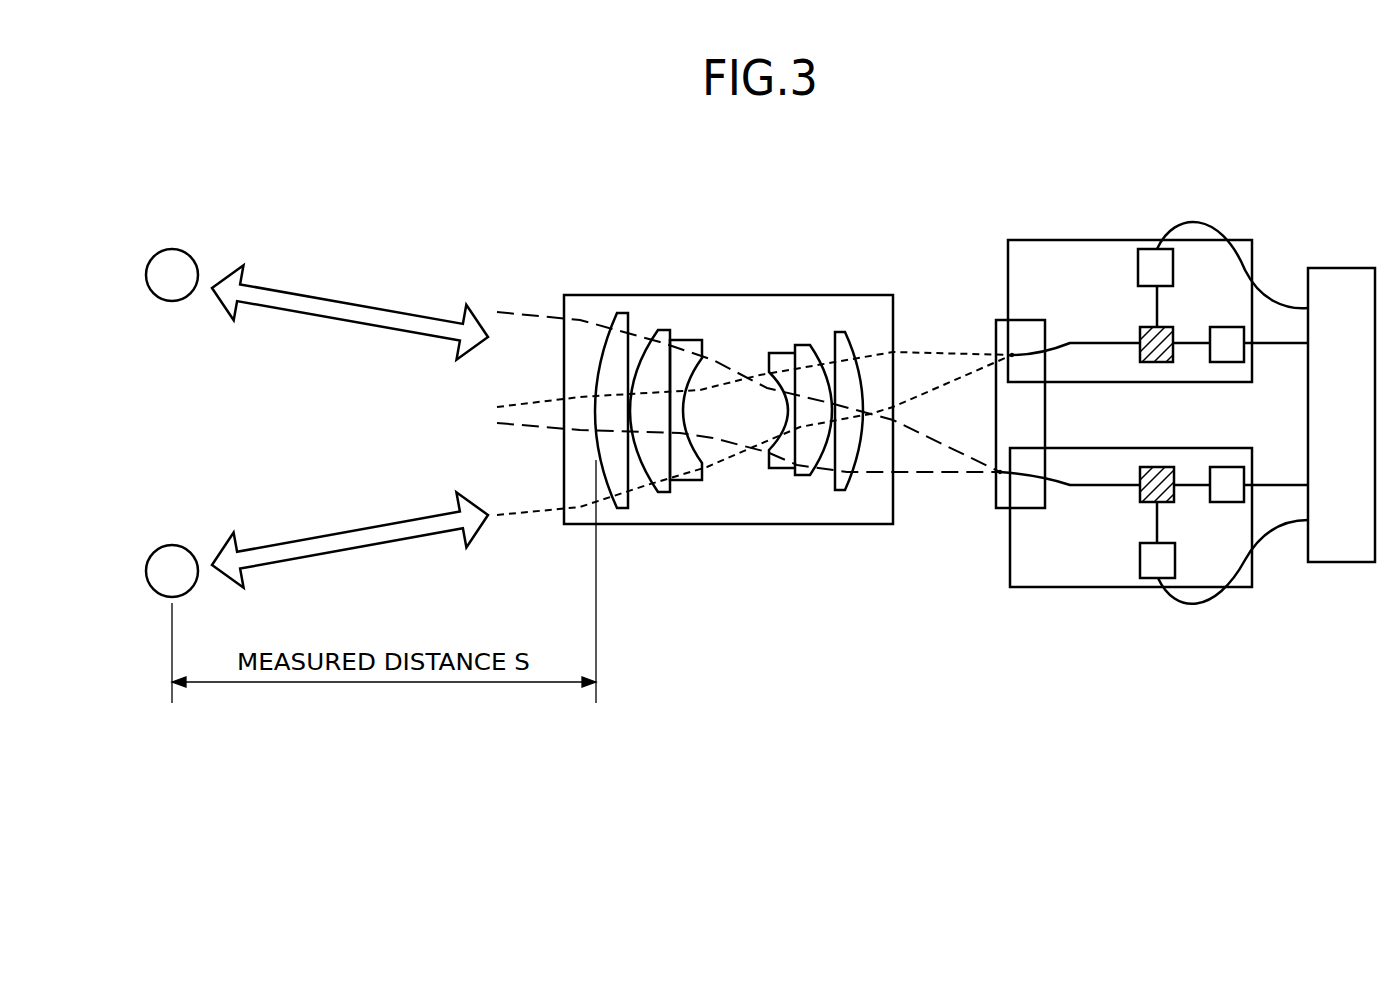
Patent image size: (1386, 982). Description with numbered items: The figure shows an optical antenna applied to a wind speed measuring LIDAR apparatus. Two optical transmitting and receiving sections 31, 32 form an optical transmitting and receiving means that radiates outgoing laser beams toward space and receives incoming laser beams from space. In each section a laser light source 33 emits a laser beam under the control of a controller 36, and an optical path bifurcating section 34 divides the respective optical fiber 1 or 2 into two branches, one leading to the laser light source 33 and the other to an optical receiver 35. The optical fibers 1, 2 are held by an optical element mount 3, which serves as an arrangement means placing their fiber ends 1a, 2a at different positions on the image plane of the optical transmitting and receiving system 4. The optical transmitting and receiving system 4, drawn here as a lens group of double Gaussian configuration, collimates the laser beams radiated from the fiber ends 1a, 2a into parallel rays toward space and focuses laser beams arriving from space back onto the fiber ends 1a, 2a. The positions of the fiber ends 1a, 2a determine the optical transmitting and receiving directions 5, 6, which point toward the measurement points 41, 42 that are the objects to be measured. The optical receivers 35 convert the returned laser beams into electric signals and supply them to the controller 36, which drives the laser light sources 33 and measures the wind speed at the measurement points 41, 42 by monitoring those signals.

The optical fiber 1 is at (1077, 342).
The fiber end 1a is at (1012, 357).
The optical fiber 2 is at (1072, 487).
The fiber end 2a is at (1002, 475).
The optical element mount 3 is at (995, 330).
The optical transmitting and receiving system 4 is at (753, 293).
The optical transmitting and receiving direction 5 is at (347, 530).
The optical transmitting and receiving direction 6 is at (325, 295).
The optical transmitting and receiving section 31 is at (1035, 240).
The optical transmitting and receiving section 32 is at (1025, 590).
The laser light source 33 is at (1138, 265).
The optical path bifurcating section 34 is at (1143, 325).
The optical receiver 35 is at (1227, 327).
The controller 36 is at (1343, 267).
The measurement point 41 is at (173, 543).
The measurement point 42 is at (172, 248).